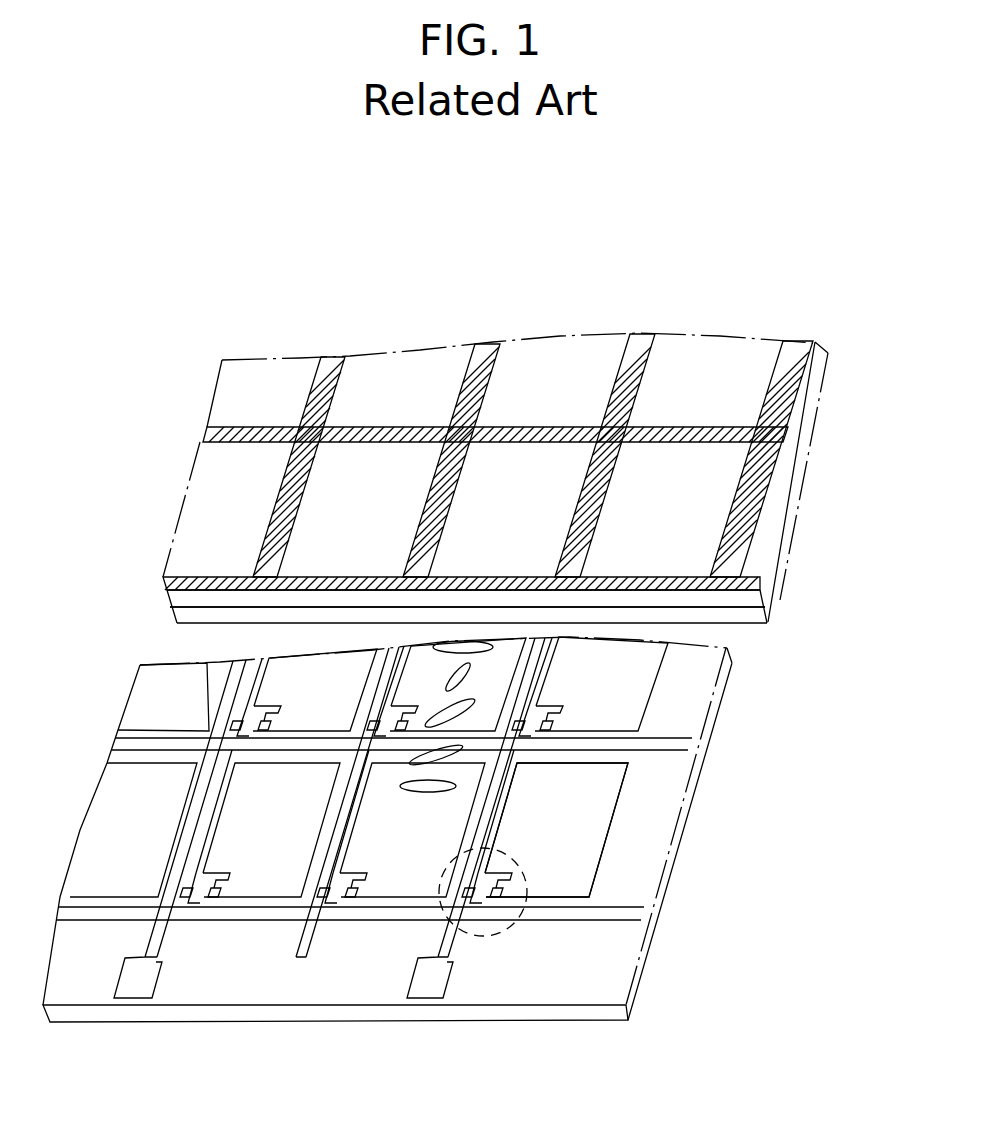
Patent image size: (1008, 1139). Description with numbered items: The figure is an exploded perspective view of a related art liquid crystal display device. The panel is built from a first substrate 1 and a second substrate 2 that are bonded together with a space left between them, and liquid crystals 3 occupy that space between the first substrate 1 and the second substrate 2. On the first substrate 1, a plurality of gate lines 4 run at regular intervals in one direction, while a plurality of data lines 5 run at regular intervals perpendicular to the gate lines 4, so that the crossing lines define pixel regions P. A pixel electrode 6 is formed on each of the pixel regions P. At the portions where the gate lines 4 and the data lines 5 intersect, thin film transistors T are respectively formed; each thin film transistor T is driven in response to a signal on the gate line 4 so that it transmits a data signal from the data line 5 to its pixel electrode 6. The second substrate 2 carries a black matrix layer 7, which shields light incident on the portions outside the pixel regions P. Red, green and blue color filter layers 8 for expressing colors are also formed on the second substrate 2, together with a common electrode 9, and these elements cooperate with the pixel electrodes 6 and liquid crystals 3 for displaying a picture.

The first substrate 1 is at (582, 1013).
The second substrate 2 is at (757, 598).
The liquid crystals 3 is at (440, 710).
The gate lines 4 is at (597, 915).
The data lines 5 is at (440, 942).
The pixel electrode 6 is at (605, 843).
The black matrix layer 7 is at (790, 437).
The color filter layers 8 is at (725, 511).
The common electrode 9 is at (752, 618).
The pixel regions P is at (650, 795).
The thin film transistors T is at (485, 936).